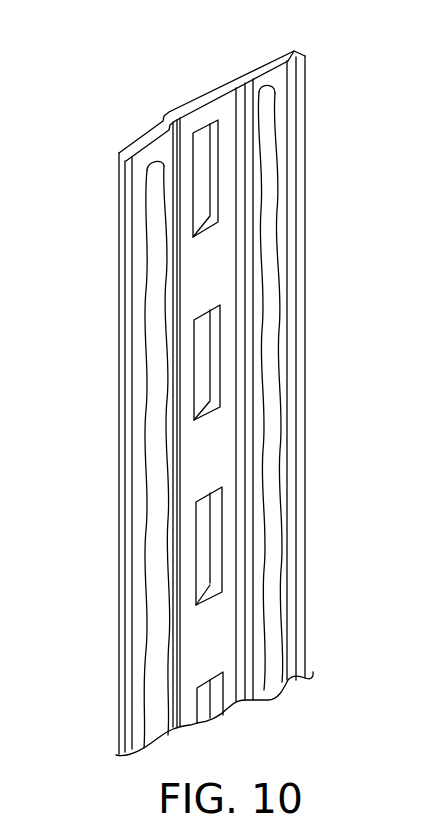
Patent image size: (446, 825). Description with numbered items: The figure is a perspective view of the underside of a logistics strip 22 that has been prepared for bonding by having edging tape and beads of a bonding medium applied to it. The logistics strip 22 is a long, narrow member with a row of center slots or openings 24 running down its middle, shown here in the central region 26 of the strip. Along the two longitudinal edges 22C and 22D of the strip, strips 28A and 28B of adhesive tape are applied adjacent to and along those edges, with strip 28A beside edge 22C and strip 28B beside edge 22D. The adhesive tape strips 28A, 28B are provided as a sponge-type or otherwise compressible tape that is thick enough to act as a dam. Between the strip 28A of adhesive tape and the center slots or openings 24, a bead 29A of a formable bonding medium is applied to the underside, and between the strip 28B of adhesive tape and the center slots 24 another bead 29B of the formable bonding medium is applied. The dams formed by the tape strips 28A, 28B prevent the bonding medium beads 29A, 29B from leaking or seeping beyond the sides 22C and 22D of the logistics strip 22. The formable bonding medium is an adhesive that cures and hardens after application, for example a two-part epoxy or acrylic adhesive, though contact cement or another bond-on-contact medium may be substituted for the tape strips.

The logistics strip 22 is at (217, 378).
The longitudinal edge 22C is at (337, 373).
The longitudinal edge 22D is at (94, 453).
The center slots 24 is at (202, 132).
The central face 26 is at (266, 384).
The strip of adhesive tape 28A is at (304, 180).
The strip of adhesive tape 28B is at (130, 302).
The bead of formable bonding medium 29A is at (278, 100).
The bead of formable bonding medium 29B is at (148, 225).